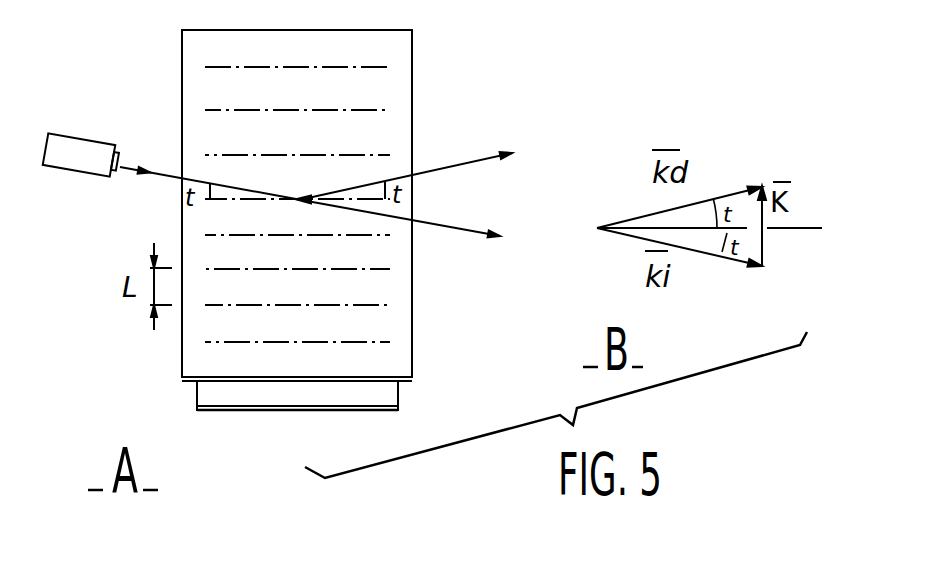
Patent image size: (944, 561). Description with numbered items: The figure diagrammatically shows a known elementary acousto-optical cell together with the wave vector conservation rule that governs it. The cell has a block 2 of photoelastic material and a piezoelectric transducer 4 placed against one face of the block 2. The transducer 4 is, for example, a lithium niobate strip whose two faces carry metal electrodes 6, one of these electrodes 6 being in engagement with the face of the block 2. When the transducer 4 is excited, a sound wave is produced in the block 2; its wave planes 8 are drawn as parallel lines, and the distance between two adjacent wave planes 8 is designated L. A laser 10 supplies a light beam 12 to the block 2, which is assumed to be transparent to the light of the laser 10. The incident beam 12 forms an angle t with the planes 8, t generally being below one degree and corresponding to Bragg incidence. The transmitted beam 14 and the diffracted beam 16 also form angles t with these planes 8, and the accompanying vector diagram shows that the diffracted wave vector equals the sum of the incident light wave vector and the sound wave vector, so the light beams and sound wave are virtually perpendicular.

The block 2 is at (182, 50).
The piezoelectric transducer 4 is at (222, 393).
The metal electrodes 6 is at (400, 409).
The wave planes 8 is at (368, 110).
The laser 10 is at (67, 153).
The light beam 12 is at (163, 173).
The transmitted beam 14 is at (463, 235).
The diffracted beam 16 is at (506, 151).